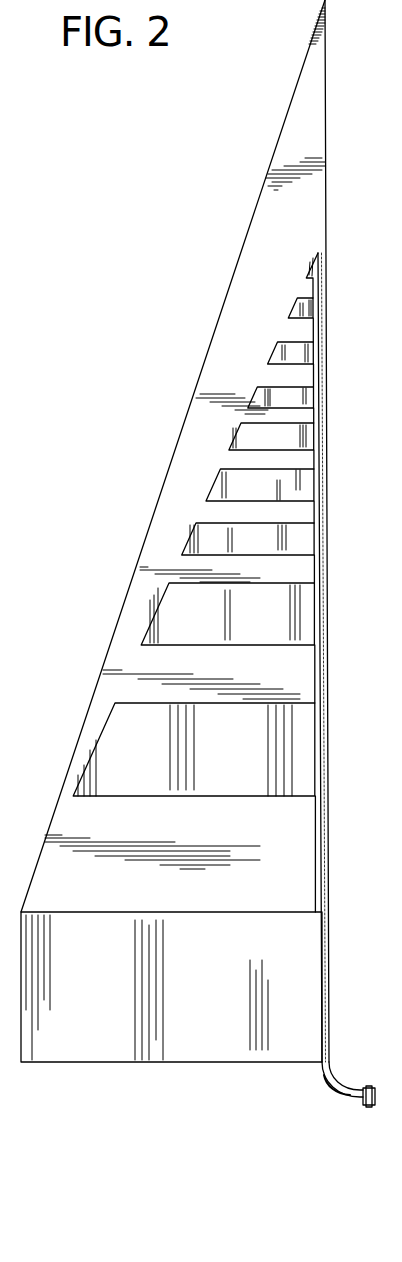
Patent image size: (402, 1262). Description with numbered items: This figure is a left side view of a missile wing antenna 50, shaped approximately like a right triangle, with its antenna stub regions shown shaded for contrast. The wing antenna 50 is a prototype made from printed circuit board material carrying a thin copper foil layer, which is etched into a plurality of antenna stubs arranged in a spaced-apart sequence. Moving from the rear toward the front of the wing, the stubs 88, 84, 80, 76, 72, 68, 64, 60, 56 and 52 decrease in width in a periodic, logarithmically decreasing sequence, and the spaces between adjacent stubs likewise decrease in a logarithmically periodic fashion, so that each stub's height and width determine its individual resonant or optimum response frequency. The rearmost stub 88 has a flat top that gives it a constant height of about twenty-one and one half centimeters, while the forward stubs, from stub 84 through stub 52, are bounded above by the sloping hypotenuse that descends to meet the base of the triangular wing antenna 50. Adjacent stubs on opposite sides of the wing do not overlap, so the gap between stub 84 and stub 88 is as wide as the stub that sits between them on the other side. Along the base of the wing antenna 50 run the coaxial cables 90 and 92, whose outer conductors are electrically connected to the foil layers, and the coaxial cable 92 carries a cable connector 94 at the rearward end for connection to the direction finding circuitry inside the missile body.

The wing antenna 50 is at (175, 452).
The antenna stub 52 is at (313, 272).
The antenna stub 56 is at (308, 311).
The antenna stub 60 is at (305, 355).
The antenna stub 64 is at (308, 400).
The antenna stub 68 is at (308, 437).
The antenna stub 72 is at (310, 488).
The antenna stub 76 is at (310, 543).
The antenna stub 80 is at (310, 612).
The antenna stub 84 is at (303, 758).
The antenna stub 88 is at (293, 982).
The coaxial cable 90 is at (327, 1032).
The coaxial cable 92 is at (338, 1093).
The cable connector 94 is at (367, 1107).